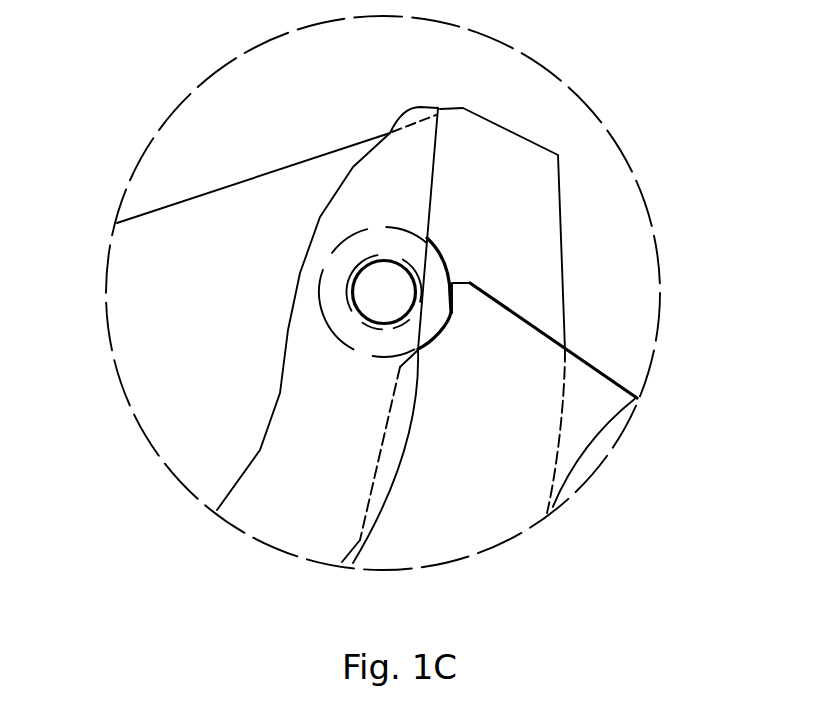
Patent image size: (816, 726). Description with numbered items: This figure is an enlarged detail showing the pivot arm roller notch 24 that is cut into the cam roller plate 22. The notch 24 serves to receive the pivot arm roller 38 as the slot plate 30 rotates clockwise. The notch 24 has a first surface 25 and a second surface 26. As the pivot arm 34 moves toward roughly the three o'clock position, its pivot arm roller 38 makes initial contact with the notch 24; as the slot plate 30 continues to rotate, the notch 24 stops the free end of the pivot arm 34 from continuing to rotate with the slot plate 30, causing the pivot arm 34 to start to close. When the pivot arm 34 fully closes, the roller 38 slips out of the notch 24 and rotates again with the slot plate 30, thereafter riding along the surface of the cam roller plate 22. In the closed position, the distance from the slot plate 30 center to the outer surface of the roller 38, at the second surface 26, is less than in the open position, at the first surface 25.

The cam roller plate 22 is at (607, 375).
The pivot arm roller notch 24 is at (453, 305).
The first surface 25 is at (452, 300).
The second surface 26 is at (372, 480).
The slot plate 30 is at (248, 177).
The pivot arm 34 is at (278, 395).
The pivot arm roller 38 is at (443, 258).